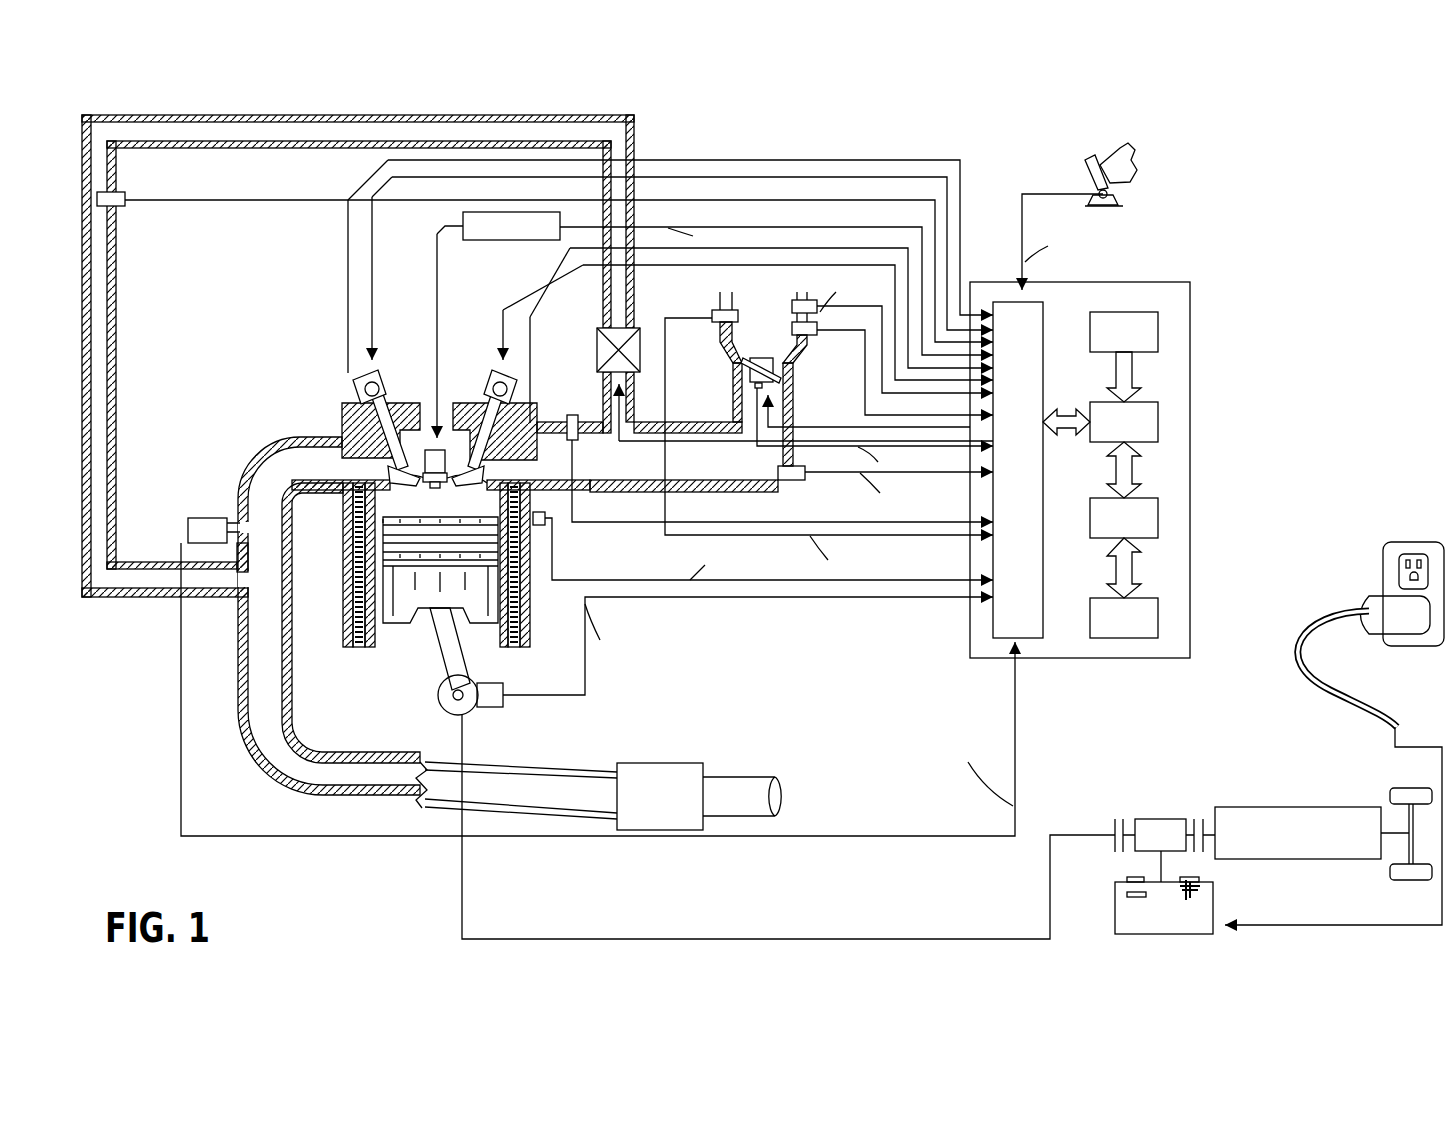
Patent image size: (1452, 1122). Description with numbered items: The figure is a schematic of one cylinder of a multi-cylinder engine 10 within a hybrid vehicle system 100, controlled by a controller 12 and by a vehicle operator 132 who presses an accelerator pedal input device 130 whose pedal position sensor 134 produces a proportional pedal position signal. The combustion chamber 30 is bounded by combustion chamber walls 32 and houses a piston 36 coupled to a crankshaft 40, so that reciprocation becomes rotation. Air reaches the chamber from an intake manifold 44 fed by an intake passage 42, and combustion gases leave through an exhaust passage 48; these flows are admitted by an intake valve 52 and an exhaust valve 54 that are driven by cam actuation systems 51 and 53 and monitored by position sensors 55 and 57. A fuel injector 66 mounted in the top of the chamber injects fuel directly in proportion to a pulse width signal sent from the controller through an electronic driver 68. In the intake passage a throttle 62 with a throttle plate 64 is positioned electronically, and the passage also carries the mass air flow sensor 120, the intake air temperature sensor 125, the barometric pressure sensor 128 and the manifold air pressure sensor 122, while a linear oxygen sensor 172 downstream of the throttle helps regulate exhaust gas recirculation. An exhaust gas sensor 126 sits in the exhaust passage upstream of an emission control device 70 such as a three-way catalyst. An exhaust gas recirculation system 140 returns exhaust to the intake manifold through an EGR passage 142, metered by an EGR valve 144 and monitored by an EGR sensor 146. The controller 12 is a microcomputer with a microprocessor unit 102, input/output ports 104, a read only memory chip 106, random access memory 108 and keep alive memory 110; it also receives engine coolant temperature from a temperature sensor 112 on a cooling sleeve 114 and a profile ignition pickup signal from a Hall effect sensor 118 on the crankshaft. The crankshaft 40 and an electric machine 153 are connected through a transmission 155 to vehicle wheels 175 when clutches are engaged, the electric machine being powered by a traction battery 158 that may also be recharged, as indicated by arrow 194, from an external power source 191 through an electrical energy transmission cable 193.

The engine 10 is at (275, 358).
The controller 12 is at (1192, 283).
The combustion chamber 30 is at (360, 585).
The combustion chamber walls 32 is at (395, 665).
The piston 36 is at (425, 598).
The crankshaft 40 is at (450, 712).
The intake passage 42 is at (871, 402).
The intake manifold 44 is at (657, 457).
The exhaust passage 48 is at (427, 628).
The cam actuation system 51 is at (492, 373).
The intake valve 52 is at (487, 465).
The cam actuation system 53 is at (378, 373).
The exhaust valve 54 is at (385, 470).
The position sensor 55 is at (527, 403).
The position sensor 57 is at (355, 385).
The throttle 62 is at (790, 368).
The throttle plate 64 is at (742, 363).
The fuel injector 66 is at (440, 455).
The electronic driver 68 is at (540, 240).
The emission control device 70 is at (699, 796).
The vehicle system 100 is at (1288, 150).
The microprocessor unit 102 is at (1160, 422).
The input/output ports 104 is at (1048, 312).
The read only memory chip 106 is at (1160, 332).
The random access memory 108 is at (1160, 520).
The keep alive memory 110 is at (1160, 620).
The temperature sensor 112 is at (545, 525).
The cooling sleeve 114 is at (515, 596).
The Hall effect sensor 118 is at (492, 707).
The mass air flow sensor 120 is at (792, 304).
The manifold air pressure sensor 122 is at (805, 478).
The intake air temperature sensor 125 is at (792, 330).
The exhaust gas sensor 126 is at (188, 522).
The barometric pressure sensor 128 is at (712, 316).
The input device 130 is at (1093, 172).
The vehicle operator 132 is at (1135, 160).
The pedal position sensor 134 is at (1115, 195).
The exhaust gas recirculation system 140 is at (498, 106).
The EGR passage 142 is at (352, 113).
The EGR valve 144 is at (597, 350).
The EGR sensor 146 is at (122, 206).
The electric machine 153 is at (1152, 819).
The transmission 155 is at (1335, 860).
The traction battery 158 is at (1205, 935).
The linear oxygen sensor 172 is at (577, 440).
The vehicle wheels 175 is at (1402, 880).
The power source 191 is at (1383, 566).
The electrical energy transmission cable 193 is at (1325, 628).
The arrow 194 is at (1395, 735).